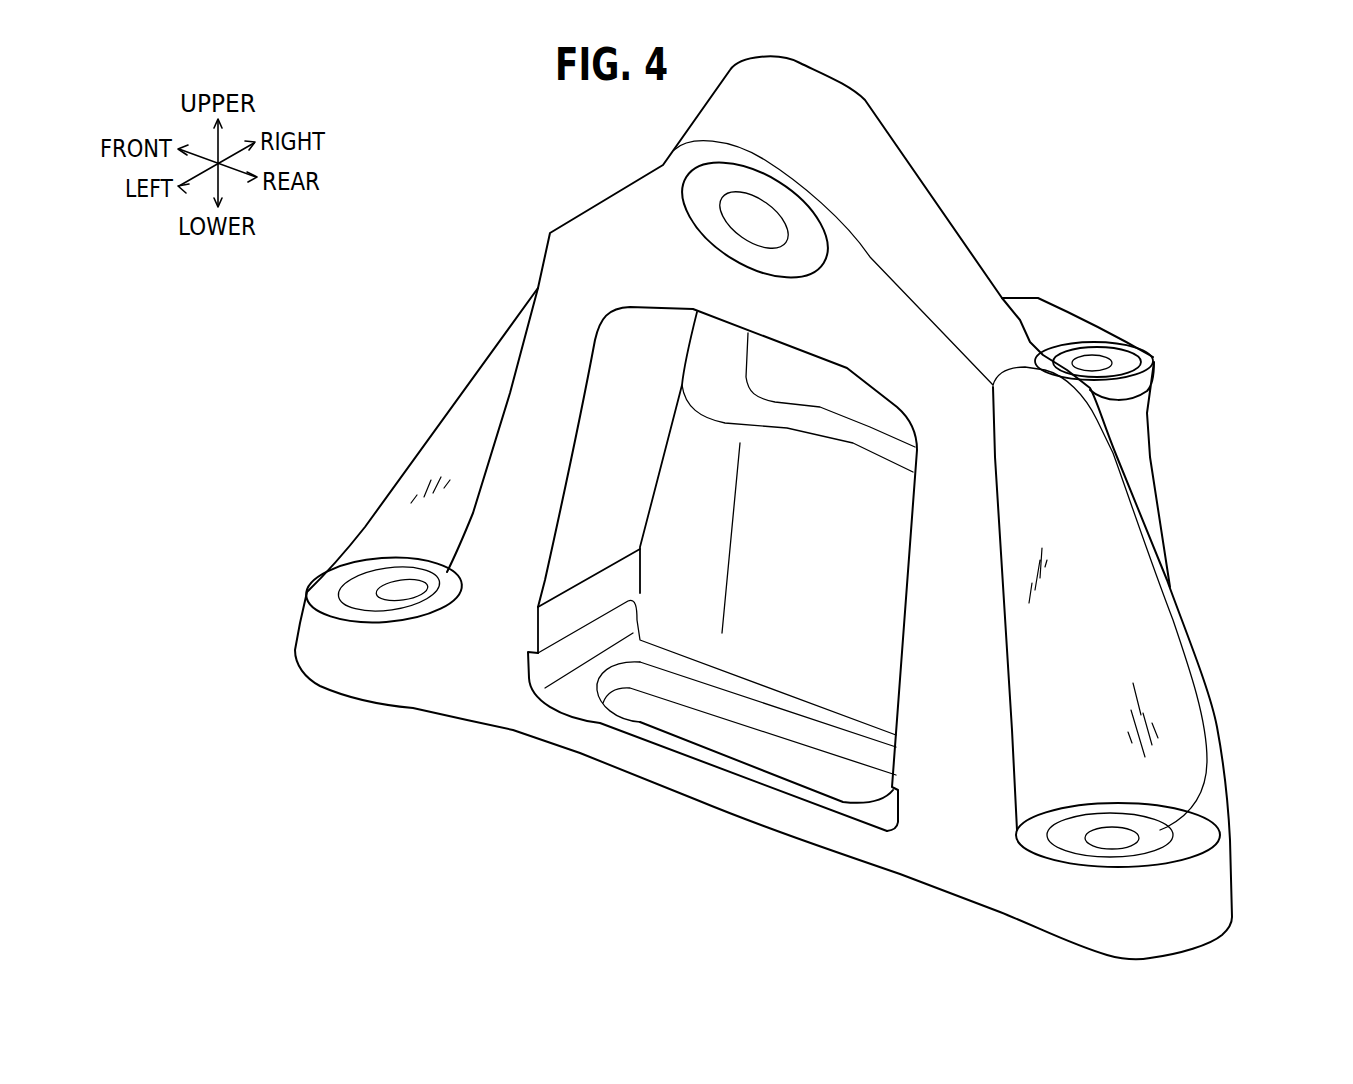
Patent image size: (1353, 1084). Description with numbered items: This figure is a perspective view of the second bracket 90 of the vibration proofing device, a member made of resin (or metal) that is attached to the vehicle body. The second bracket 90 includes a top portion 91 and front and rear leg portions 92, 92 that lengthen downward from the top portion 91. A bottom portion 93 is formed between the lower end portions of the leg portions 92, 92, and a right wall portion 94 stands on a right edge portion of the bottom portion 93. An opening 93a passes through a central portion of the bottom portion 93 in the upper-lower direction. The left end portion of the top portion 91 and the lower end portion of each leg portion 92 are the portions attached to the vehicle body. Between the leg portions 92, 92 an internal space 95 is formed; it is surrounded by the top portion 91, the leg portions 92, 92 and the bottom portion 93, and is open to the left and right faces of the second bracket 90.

The second bracket 90 is at (648, 146).
The top portion 91 is at (895, 203).
The leg portion 92 is at (460, 430).
The bottom portion 93 is at (657, 762).
The opening 93a is at (720, 755).
The right wall portion 94 is at (827, 655).
The internal space 95 is at (632, 357).